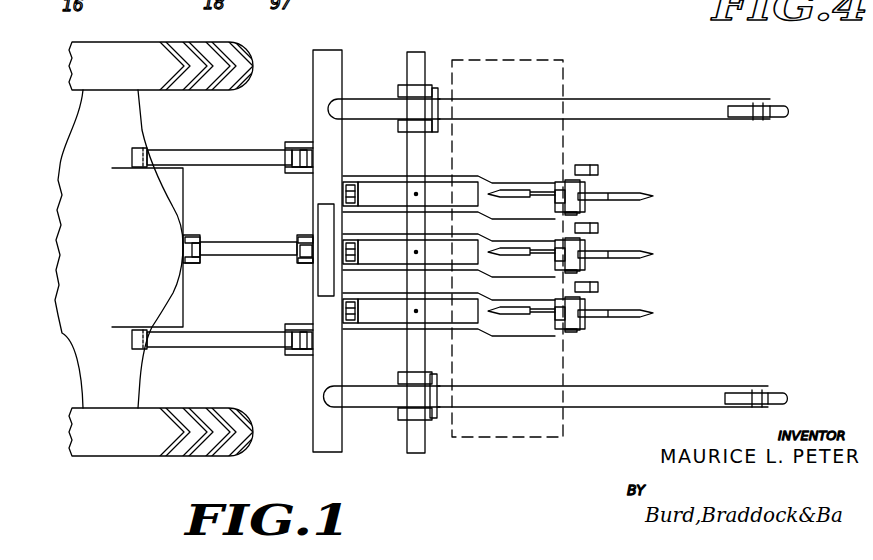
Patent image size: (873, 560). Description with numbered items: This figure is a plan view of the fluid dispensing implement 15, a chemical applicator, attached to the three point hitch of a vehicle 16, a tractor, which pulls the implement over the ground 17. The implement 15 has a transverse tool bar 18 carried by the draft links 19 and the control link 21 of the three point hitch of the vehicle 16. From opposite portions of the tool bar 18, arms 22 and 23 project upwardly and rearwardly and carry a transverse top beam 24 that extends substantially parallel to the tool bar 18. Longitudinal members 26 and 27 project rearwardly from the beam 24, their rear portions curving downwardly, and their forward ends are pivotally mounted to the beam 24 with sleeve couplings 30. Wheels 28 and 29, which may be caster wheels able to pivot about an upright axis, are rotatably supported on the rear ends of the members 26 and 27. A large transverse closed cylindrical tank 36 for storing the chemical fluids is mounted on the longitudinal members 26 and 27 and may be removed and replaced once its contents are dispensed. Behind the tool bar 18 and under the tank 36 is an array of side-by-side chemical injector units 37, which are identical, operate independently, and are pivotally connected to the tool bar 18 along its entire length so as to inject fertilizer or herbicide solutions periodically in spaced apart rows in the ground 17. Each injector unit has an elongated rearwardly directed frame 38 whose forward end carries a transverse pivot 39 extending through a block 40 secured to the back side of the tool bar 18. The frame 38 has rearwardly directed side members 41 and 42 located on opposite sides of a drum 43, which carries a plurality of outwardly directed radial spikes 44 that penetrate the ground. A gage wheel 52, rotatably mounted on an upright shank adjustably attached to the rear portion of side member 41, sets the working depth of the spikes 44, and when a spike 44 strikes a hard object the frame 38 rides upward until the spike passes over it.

The fluid dispensing implement 15 is at (545, 53).
The vehicle 16 is at (105, 115).
The ground 17 is at (243, 382).
The transverse tool bar 18 is at (323, 368).
The draft links 19 is at (218, 158).
The control link 21 is at (267, 252).
The arm 22 is at (375, 97).
The arm 23 is at (380, 397).
The transverse top beam 24 is at (420, 435).
The longitudinal member 26 is at (667, 108).
The longitudinal member 27 is at (665, 393).
The wheel 28 is at (790, 110).
The wheel 29 is at (782, 392).
The sleeve couplings 30 is at (433, 84).
The cylindrical tank 36 is at (563, 85).
The chemical injector units 37 is at (668, 290).
The frame 38 is at (385, 313).
The transverse pivot 39 is at (348, 288).
The block 40 is at (343, 308).
The side member 41 is at (595, 293).
The side member 42 is at (578, 335).
The drum 43 is at (585, 323).
The spikes 44 is at (652, 316).
The gage wheel 52 is at (595, 282).